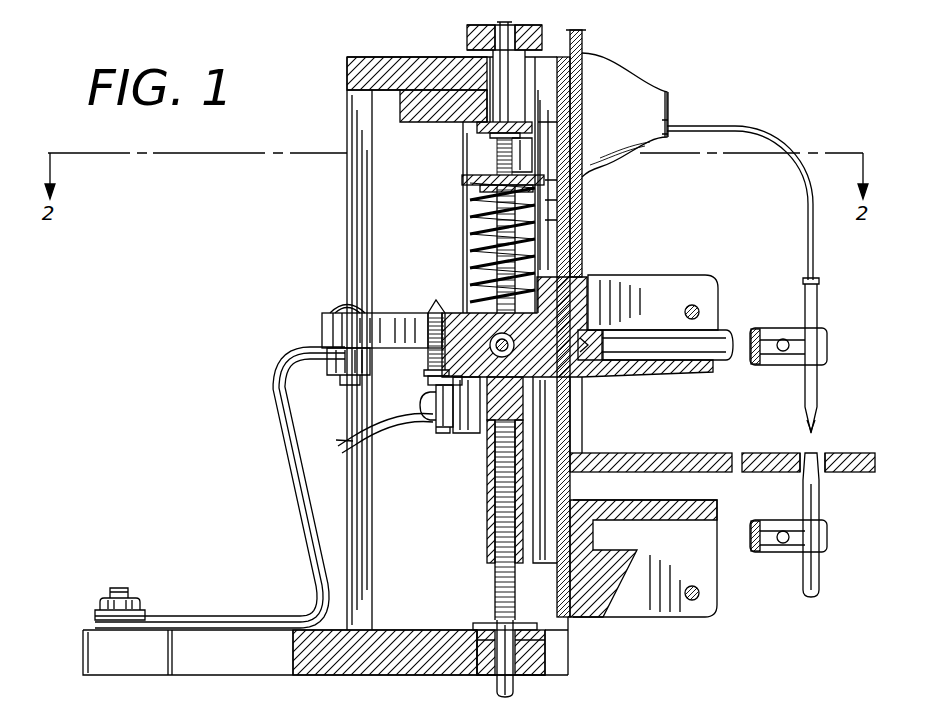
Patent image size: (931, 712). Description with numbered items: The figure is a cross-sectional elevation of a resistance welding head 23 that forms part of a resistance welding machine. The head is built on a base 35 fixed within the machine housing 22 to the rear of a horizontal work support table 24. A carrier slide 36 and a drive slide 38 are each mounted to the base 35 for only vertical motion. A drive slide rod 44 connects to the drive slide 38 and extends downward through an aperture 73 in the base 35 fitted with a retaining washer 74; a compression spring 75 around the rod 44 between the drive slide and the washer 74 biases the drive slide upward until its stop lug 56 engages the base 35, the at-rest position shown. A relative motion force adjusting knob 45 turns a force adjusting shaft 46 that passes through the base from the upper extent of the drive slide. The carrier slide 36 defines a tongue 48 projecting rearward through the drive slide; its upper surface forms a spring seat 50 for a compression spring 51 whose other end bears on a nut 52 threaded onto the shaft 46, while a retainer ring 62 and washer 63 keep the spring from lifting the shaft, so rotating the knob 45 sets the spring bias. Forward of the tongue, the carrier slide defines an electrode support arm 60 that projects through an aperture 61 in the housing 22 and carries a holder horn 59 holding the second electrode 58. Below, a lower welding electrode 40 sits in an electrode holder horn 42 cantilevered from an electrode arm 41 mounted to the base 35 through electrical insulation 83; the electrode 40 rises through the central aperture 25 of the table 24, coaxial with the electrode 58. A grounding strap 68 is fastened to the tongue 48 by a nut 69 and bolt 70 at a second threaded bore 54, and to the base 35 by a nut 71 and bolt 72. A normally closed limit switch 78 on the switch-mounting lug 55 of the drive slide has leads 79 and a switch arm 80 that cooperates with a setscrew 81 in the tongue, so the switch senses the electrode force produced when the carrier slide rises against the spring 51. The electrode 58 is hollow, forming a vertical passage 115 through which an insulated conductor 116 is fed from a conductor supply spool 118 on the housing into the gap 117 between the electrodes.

The housing 22 is at (583, 50).
The resistance welding head 23 is at (640, 75).
The work support table 24 is at (840, 473).
The central aperture 25 is at (821, 455).
The base 35 is at (347, 185).
The carrier slide 36 is at (582, 185).
The drive slide 38 is at (487, 440).
The lower welding electrode 40 is at (820, 575).
The electrode arm 41 is at (676, 617).
The electrode holder horn 42 is at (757, 553).
The drive slide rod 44 is at (516, 680).
The relative motion force adjusting knob 45 is at (467, 38).
The relative motion force adjusting shaft 46 is at (490, 145).
The tongue 48 is at (432, 313).
The spring seat 50 is at (470, 264).
The compression spring 51 is at (468, 228).
The nut 52 is at (470, 200).
The second threaded bore 54 is at (322, 336).
The switch-mounting lug 55 is at (470, 433).
The stop lug 56 is at (410, 122).
The second electrode 58 is at (825, 315).
The holder horn 59 is at (720, 330).
The electrode support arm 60 is at (665, 280).
The aperture 61 is at (582, 222).
The retainer ring 62 is at (462, 180).
The washer 63 is at (535, 128).
The grounding strap 68 is at (293, 488).
The nut 69 is at (332, 376).
The bolt 70 is at (345, 303).
The nut 71 is at (145, 608).
The bolt 72 is at (120, 590).
The aperture 73 is at (488, 675).
The retaining washer 74 is at (485, 620).
The compression spring 75 is at (493, 520).
The limit switch 78 is at (420, 400).
The leads 79 is at (380, 440).
The switch arm 80 is at (428, 380).
The setscrew 81 is at (424, 350).
The electrical insulation 83 is at (572, 620).
The vertical passage 115 is at (818, 378).
The insulated conductor 116 is at (796, 175).
The gap 117 is at (802, 426).
The conductor supply spool 118 is at (668, 92).